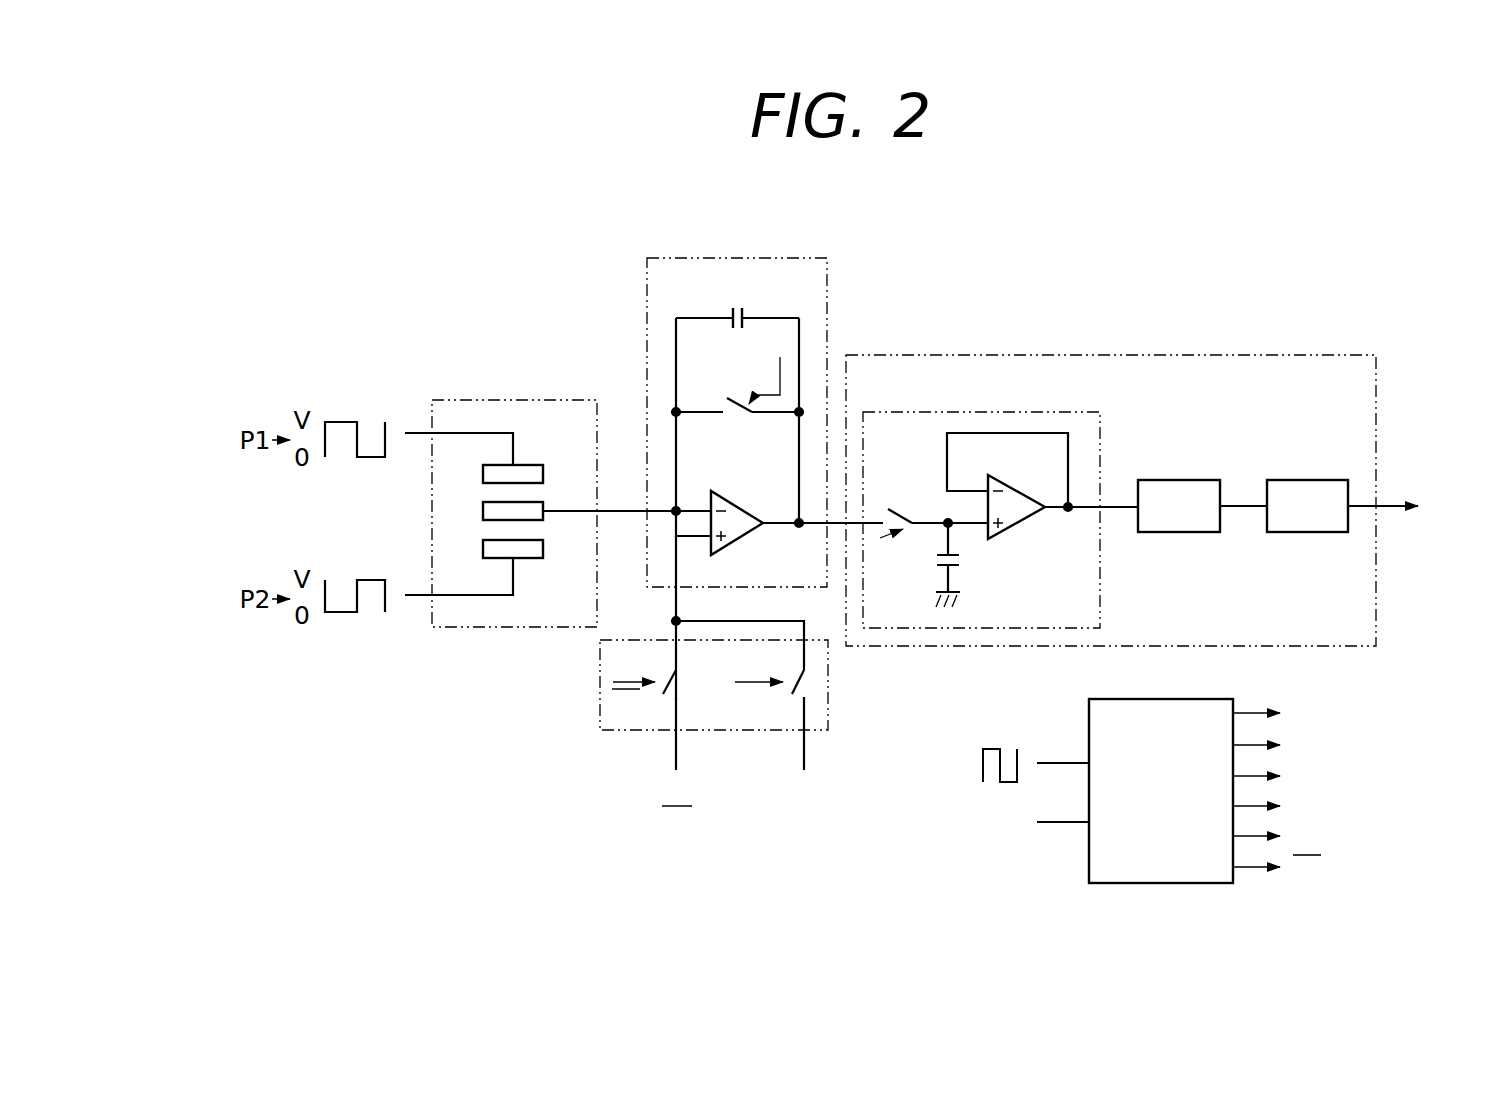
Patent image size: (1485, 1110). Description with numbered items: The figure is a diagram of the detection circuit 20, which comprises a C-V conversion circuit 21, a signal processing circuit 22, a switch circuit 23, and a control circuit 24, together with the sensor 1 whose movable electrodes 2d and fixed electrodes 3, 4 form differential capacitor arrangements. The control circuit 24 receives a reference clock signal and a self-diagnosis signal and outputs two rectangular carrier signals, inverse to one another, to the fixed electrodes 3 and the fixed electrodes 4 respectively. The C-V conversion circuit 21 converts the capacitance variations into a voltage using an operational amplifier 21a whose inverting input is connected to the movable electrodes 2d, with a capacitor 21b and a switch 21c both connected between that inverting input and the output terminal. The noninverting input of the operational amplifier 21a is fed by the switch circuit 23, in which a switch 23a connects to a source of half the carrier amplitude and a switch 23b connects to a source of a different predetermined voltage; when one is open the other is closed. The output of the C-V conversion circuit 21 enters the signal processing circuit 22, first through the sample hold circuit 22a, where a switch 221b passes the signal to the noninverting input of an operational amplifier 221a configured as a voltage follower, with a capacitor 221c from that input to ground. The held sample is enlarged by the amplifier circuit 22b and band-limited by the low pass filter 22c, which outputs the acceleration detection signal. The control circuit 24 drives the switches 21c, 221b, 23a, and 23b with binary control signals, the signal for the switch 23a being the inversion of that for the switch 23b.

The capacitive sensor 1 is at (514, 492).
The fixed electrodes 3 is at (545, 476).
The movable electrodes 2d is at (545, 514).
The fixed electrodes 4 is at (545, 552).
The detection circuit 20 is at (970, 289).
The C-V conversion circuit 21 is at (765, 492).
The operational amplifier 21a is at (742, 505).
The capacitor 21b is at (746, 306).
The switch 21c is at (737, 400).
The signal processing circuit 22 is at (1132, 478).
The sample hold circuit 22a is at (1000, 498).
The amplifier circuit 22b is at (1185, 476).
The low pass filter 22c is at (1315, 476).
The operational amplifier 221a is at (1022, 487).
The switch 221b is at (905, 508).
The capacitor 221c is at (963, 558).
The switch circuit 23 is at (748, 729).
The switch 23a is at (668, 680).
The switch 23b is at (797, 680).
The control circuit 24 is at (1178, 697).